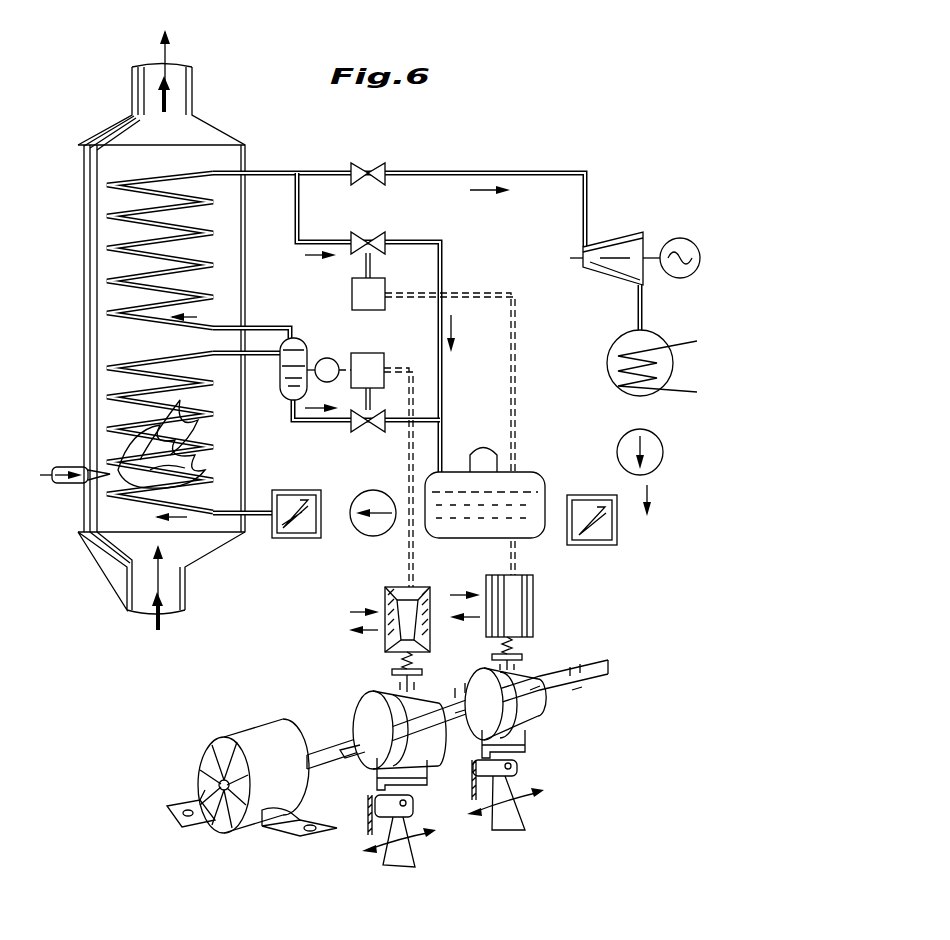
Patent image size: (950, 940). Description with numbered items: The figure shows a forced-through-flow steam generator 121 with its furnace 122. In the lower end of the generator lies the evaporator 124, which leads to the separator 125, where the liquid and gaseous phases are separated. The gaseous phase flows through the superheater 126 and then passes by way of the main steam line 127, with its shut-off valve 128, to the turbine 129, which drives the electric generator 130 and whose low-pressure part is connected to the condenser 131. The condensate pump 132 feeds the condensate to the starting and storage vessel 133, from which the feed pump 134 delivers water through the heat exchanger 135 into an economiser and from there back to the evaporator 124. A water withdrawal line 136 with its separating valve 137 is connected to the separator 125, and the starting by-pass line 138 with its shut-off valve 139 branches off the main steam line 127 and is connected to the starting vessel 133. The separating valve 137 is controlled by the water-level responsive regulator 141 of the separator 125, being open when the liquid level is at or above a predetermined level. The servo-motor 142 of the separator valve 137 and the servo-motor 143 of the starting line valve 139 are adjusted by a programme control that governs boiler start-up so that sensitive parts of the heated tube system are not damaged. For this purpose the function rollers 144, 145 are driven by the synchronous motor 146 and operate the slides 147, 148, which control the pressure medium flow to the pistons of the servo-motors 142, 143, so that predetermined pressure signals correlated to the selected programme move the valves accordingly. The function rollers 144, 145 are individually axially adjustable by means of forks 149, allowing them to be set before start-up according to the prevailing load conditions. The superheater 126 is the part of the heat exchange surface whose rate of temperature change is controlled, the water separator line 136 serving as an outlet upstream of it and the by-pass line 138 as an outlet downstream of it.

The forced-through-flow steam generator 121 is at (96, 548).
The furnace 122 is at (98, 484).
The evaporator 124 is at (102, 398).
The separator 125 is at (304, 340).
The superheater 126 is at (107, 247).
The main steam line 127 is at (276, 170).
The shut-off valve 128 is at (380, 153).
The turbine 129 is at (618, 242).
The electric generator 130 is at (684, 280).
The condenser 131 is at (606, 364).
The condensate pump 132 is at (620, 448).
The starting and storage vessel 133 is at (471, 539).
The feed pump 134 is at (372, 537).
The heat exchanger 135 is at (298, 539).
The water withdrawal line 136 is at (323, 422).
The separating valve 137 is at (366, 432).
The starting by-pass line 138 is at (299, 212).
The shut-off valve 139 is at (377, 235).
The water-level responsive regulator 141 is at (331, 357).
The servo-motor 142 is at (372, 357).
The servo-motor 143 is at (382, 290).
The function roller 144 is at (358, 720).
The function roller 145 is at (528, 707).
The synchronous motor 146 is at (250, 735).
The slide 147 is at (385, 598).
The slide 148 is at (534, 604).
The fork 149 is at (378, 782).